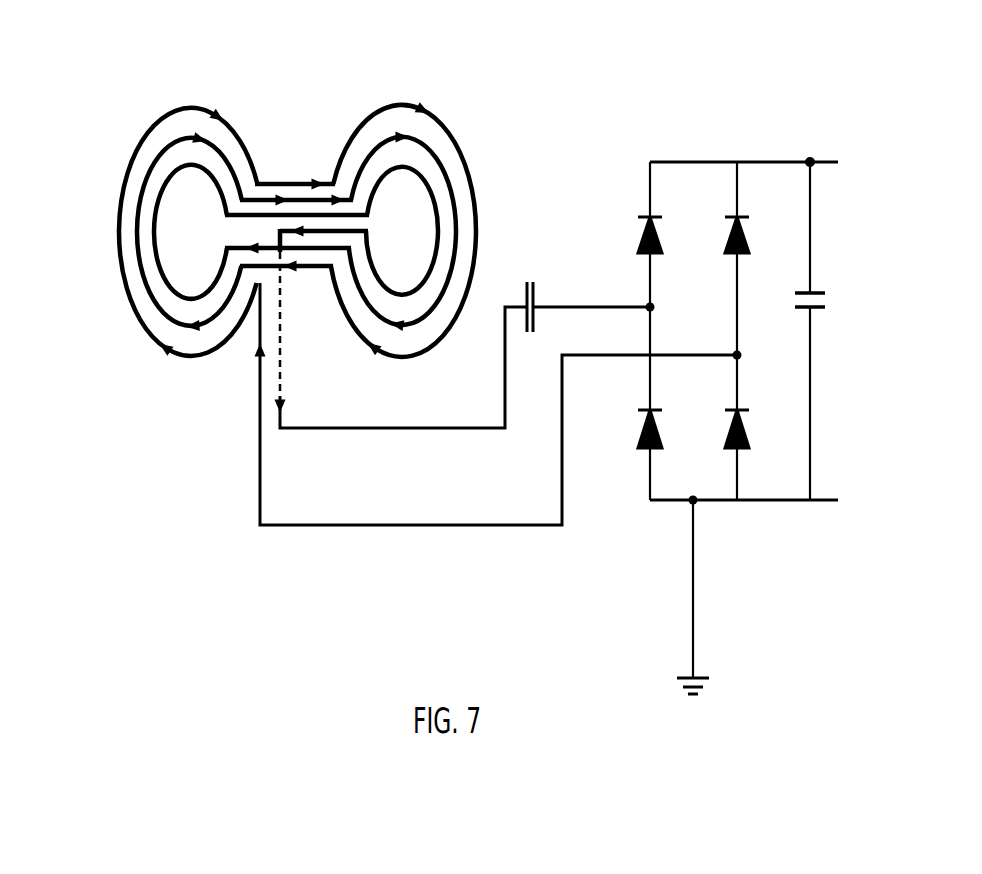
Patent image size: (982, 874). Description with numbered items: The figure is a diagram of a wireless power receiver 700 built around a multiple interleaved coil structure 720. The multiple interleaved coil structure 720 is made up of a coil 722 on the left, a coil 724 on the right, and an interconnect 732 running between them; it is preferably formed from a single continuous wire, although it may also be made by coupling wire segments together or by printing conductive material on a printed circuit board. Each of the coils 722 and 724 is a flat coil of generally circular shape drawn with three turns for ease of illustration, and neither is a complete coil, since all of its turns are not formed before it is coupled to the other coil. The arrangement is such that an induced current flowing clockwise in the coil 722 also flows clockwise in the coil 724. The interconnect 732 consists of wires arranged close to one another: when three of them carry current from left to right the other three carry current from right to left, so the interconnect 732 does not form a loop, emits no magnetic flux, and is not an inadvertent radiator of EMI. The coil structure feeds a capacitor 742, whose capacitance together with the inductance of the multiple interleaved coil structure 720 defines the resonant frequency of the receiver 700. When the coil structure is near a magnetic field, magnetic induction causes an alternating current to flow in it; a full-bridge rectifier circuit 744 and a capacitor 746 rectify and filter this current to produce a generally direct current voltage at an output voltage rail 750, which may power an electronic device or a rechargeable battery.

The wireless power receiver 700 is at (462, 357).
The multiple interleaved coil structure 720 is at (291, 242).
The coil 722 is at (135, 155).
The coil 724 is at (458, 148).
The interconnect 732 is at (301, 134).
The capacitor 742 is at (535, 289).
The full-bridge rectifier circuit 744 is at (620, 221).
The capacitor 746 is at (817, 292).
The output voltage rail 750 is at (809, 160).